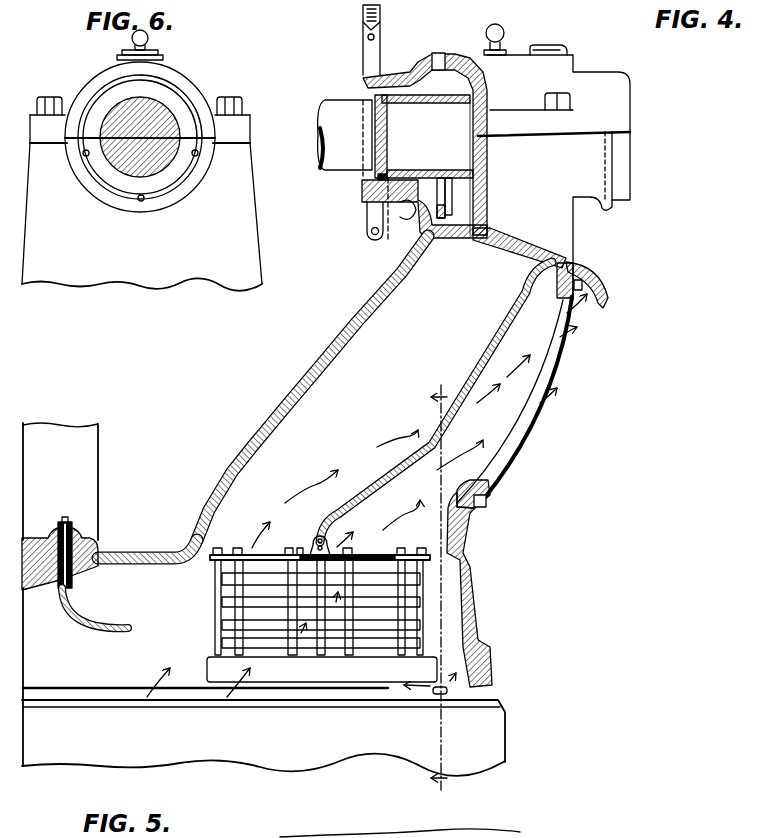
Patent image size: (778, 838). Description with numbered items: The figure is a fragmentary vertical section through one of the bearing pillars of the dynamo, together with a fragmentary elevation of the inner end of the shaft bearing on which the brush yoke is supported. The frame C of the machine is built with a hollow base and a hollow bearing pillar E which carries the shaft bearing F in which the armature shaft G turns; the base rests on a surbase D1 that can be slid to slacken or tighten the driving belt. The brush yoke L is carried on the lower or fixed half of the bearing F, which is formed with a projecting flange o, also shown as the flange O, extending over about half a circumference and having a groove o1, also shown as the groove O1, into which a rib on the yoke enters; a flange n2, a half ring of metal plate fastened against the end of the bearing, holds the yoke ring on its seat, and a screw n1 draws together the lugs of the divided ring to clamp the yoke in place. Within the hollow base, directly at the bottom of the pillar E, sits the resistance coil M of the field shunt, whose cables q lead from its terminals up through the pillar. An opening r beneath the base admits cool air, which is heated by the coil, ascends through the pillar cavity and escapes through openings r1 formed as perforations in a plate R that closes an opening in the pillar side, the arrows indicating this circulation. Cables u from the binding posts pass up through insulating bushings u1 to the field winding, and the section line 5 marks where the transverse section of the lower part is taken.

In FIG. 6, the shaft bearing F is at (97, 199).
In FIG. 4, the shaft bearing F is at (551, 166).
In FIG. 6, the armature shaft G is at (120, 118).
In FIG. 4, the armature shaft G is at (402, 146).
In FIG. 6, the projecting flange O is at (195, 191).
In FIG. 6, the groove O1 is at (180, 201).
In FIG. 4, the brush yoke L is at (368, 62).
In FIG. 4, the flange n2 is at (367, 207).
In FIG. 4, the screw n1 is at (370, 243).
In FIG. 4, the projecting flange o is at (388, 217).
In FIG. 4, the groove o1 is at (408, 215).
In FIG. 4, the bearing pillar E is at (392, 392).
In FIG. 4, the frame C is at (147, 526).
In FIG. 4, the cable q is at (498, 348).
In FIG. 4, the plate R is at (502, 477).
In FIG. 4, the openings r1 is at (558, 348).
In FIG. 4, the section line 5 is at (440, 594).
In FIG. 4, the insulating bushing u1 is at (78, 578).
In FIG. 4, the cable u is at (85, 629).
In FIG. 4, the resistance coil M is at (303, 609).
In FIG. 4, the surbase D1 is at (263, 731).
In FIG. 4, the opening r is at (92, 694).